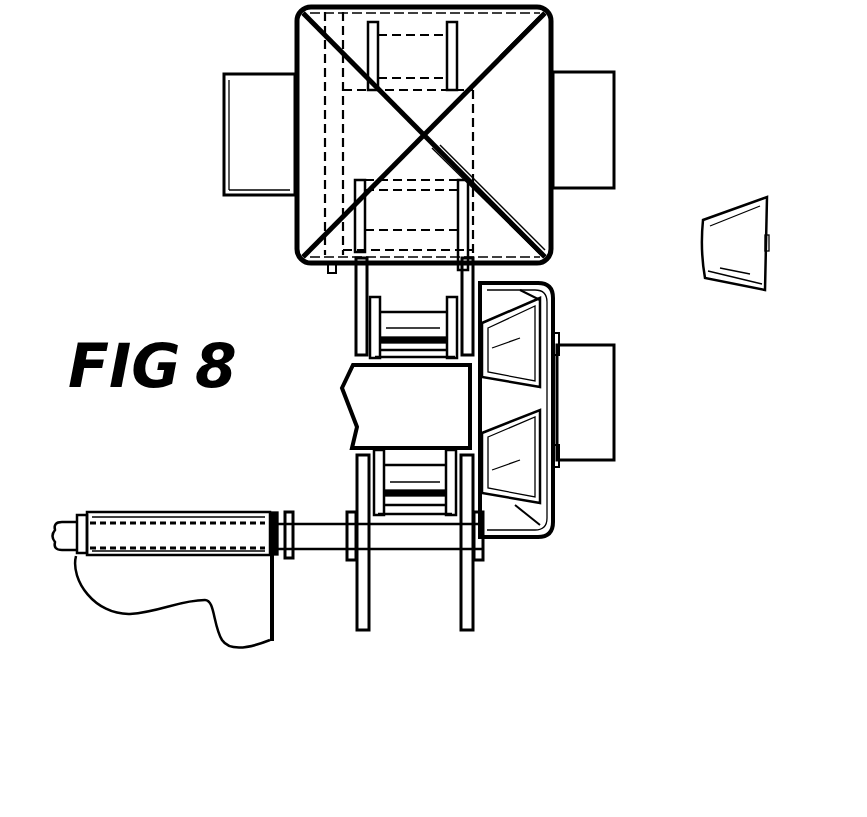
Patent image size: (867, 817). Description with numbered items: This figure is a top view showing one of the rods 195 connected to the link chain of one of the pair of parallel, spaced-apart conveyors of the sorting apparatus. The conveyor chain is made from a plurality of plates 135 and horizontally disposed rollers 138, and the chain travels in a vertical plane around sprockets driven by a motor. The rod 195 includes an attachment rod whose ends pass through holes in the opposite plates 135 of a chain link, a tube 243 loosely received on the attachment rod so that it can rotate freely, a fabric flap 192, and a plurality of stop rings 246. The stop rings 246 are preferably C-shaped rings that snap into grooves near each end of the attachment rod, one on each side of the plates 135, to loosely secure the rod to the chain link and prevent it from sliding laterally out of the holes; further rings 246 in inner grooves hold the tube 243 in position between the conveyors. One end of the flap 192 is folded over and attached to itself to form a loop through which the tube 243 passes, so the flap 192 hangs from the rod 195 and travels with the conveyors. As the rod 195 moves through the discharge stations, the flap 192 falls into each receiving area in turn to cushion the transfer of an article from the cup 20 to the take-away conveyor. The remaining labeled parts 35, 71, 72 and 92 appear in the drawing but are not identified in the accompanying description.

The cup 20 is at (555, 320).
The lens frames 35 is at (528, 318).
The side boxes 71 is at (606, 128).
The left box 72 is at (258, 88).
The dashed internal components 92 is at (330, 192).
The plates 135 is at (357, 283).
The rollers 138 is at (388, 328).
The fabric flap 192 is at (133, 595).
The rod 195 is at (60, 555).
The tube 243 is at (78, 558).
The stop rings 246 is at (292, 560).